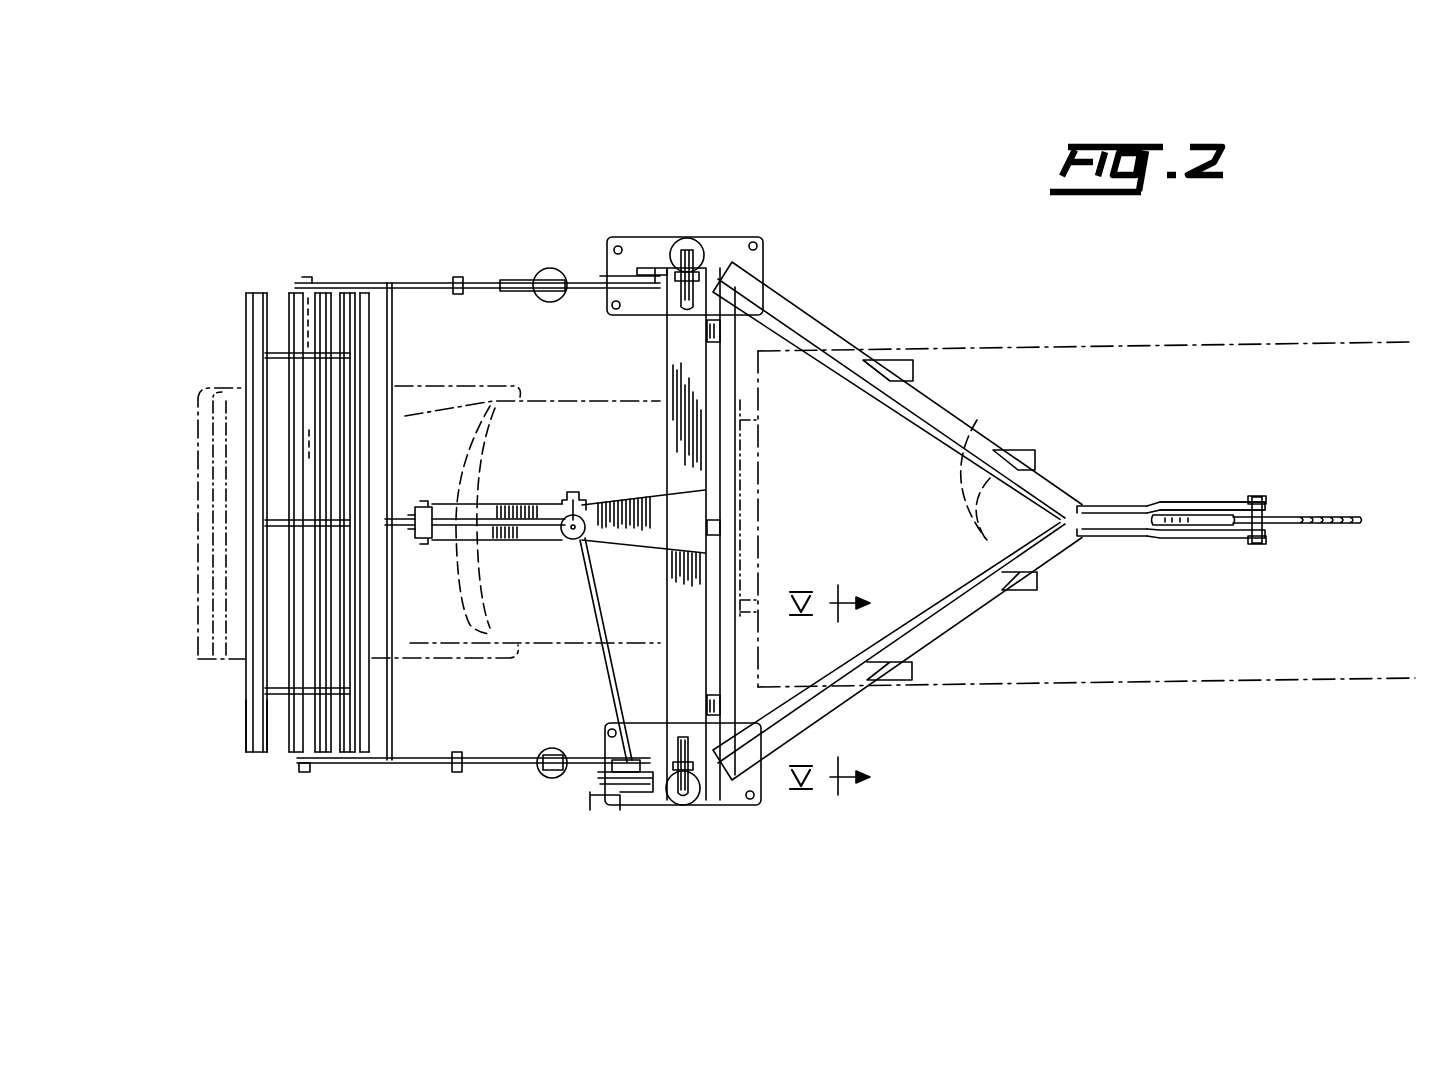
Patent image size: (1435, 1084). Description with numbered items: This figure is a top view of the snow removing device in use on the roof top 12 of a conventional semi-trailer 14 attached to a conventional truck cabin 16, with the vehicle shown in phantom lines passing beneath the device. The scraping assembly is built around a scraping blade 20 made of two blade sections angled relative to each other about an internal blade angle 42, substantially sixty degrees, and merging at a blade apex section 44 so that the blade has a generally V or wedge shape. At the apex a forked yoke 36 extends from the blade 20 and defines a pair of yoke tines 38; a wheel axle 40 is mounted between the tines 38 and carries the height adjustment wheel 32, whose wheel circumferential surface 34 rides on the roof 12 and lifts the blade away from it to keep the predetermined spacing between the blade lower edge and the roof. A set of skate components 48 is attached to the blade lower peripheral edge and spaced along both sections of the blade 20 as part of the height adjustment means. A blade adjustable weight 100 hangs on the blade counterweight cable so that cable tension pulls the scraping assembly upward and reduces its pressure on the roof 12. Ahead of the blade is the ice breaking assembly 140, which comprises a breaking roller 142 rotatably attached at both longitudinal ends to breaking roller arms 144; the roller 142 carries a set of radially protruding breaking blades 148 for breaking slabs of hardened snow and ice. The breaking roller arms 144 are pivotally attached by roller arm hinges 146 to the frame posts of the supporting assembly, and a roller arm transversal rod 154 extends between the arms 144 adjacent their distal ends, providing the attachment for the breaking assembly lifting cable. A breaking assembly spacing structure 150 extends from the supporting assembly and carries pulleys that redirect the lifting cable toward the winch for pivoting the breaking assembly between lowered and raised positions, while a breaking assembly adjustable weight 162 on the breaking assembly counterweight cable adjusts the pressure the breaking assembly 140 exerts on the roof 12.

The roof top 12 is at (1070, 685).
The semi-trailer 14 is at (1220, 395).
The truck cabin 16 is at (499, 679).
The scraping blade 20 is at (815, 333).
The height adjustment wheel 32 is at (1293, 532).
The wheel circumferential surface 34 is at (1283, 518).
The forked yoke 36 is at (1164, 492).
The yoke tines 38 is at (1210, 500).
The wheel axle 40 is at (1257, 532).
The internal blade angle 42 is at (968, 440).
The blade apex section 44 is at (1080, 515).
The skate components 48 is at (900, 367).
The blade adjustable weight 100 is at (692, 805).
The ice breaking assembly 140 is at (384, 248).
The breaking roller 142 is at (308, 313).
The breaking roller arms 144 is at (432, 280).
The roller arm hinges 146 is at (643, 263).
The breaking blades 148 is at (360, 640).
The breaking assembly spacing structure 150 is at (474, 516).
The roller arm transversal rod 154 is at (392, 732).
The breaking assembly adjustable weight 162 is at (553, 780).